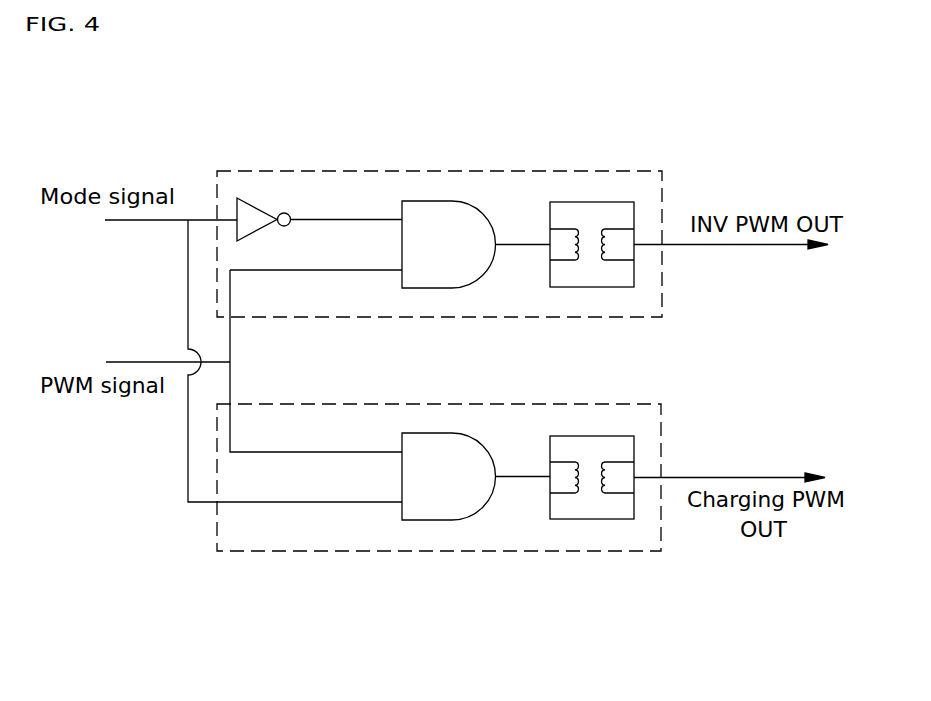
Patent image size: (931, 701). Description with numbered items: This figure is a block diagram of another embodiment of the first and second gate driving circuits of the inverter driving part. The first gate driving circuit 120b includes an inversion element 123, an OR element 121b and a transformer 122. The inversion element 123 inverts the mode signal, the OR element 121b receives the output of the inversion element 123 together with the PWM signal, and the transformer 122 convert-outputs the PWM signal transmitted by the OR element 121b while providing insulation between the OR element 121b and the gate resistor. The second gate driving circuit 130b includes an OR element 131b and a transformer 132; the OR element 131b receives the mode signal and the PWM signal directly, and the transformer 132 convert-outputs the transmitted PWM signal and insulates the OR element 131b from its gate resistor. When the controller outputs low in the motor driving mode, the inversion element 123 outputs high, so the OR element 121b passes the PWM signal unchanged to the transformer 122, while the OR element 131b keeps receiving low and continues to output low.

The first gate driving circuit 120b is at (378, 171).
The OR element 121b is at (442, 222).
The transformer 122 is at (603, 202).
The inversion element 123 is at (260, 203).
The second gate driving circuit 130b is at (335, 552).
The OR element 131b is at (442, 497).
The transformer 132 is at (600, 519).